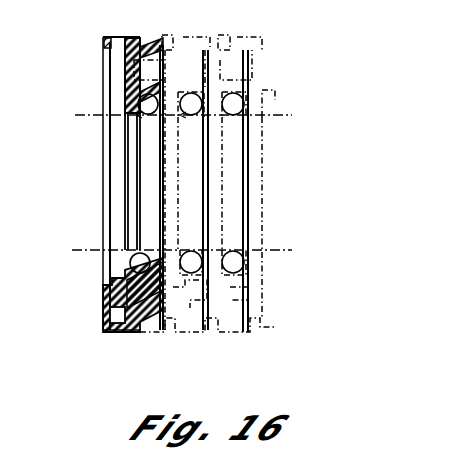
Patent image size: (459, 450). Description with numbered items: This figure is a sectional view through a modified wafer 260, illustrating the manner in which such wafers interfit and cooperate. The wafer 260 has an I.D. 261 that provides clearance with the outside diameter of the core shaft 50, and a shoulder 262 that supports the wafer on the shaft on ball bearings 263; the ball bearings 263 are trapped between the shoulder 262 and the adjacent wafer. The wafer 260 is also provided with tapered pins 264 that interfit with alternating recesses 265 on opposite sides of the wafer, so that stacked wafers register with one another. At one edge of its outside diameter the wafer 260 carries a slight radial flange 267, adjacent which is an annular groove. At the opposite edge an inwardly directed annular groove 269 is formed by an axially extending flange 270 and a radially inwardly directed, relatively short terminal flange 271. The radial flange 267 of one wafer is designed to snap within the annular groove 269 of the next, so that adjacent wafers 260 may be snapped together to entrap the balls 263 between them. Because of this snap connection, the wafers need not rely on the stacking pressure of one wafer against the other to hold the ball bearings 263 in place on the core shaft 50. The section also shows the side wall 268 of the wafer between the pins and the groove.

The core shaft 50 is at (90, 250).
The wafer 260 is at (111, 331).
The I.D. 261 is at (137, 254).
The shoulder 262 is at (155, 256).
The ball bearings 263 is at (142, 120).
The tapered pins 264 is at (108, 310).
The recesses 265 is at (137, 67).
The radial flange 267 is at (160, 42).
The side wall 268 is at (140, 36).
The annular groove 269 is at (118, 62).
The axially extending flange 270 is at (115, 36).
The terminal flange 271 is at (107, 44).